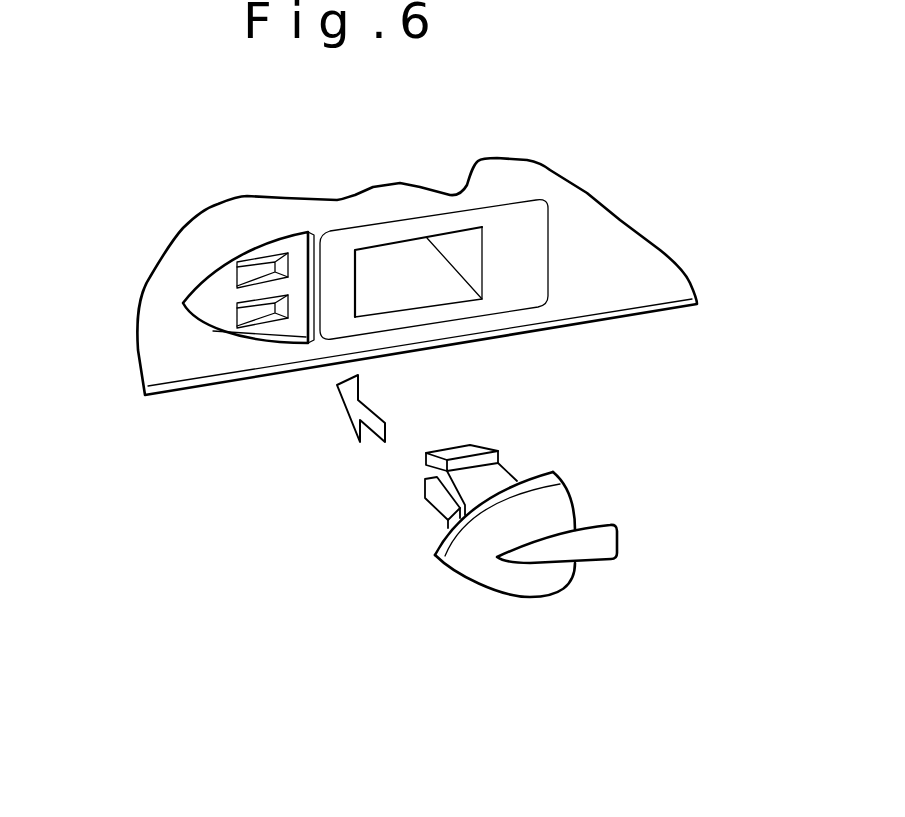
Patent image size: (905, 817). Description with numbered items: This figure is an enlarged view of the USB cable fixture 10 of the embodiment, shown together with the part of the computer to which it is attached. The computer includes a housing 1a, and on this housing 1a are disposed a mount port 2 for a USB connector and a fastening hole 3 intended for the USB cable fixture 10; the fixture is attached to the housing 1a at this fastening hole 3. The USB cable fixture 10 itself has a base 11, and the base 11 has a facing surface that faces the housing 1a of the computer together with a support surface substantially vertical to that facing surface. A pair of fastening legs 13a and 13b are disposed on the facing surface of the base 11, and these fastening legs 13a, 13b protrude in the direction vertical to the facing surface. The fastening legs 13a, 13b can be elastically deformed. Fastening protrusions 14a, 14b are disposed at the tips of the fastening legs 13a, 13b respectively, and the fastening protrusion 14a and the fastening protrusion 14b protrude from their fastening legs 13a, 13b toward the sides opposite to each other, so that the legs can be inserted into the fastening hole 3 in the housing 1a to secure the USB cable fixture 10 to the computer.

The housing 1a is at (196, 244).
The mount port 2 is at (472, 253).
The fastening hole 3 is at (242, 275).
The USB cable fixture 10 is at (475, 542).
The base 11 is at (458, 570).
The fastening leg 13a is at (515, 472).
The fastening leg 13b is at (435, 518).
The fastening protrusion 14a is at (473, 451).
The fastening protrusion 14b is at (425, 492).